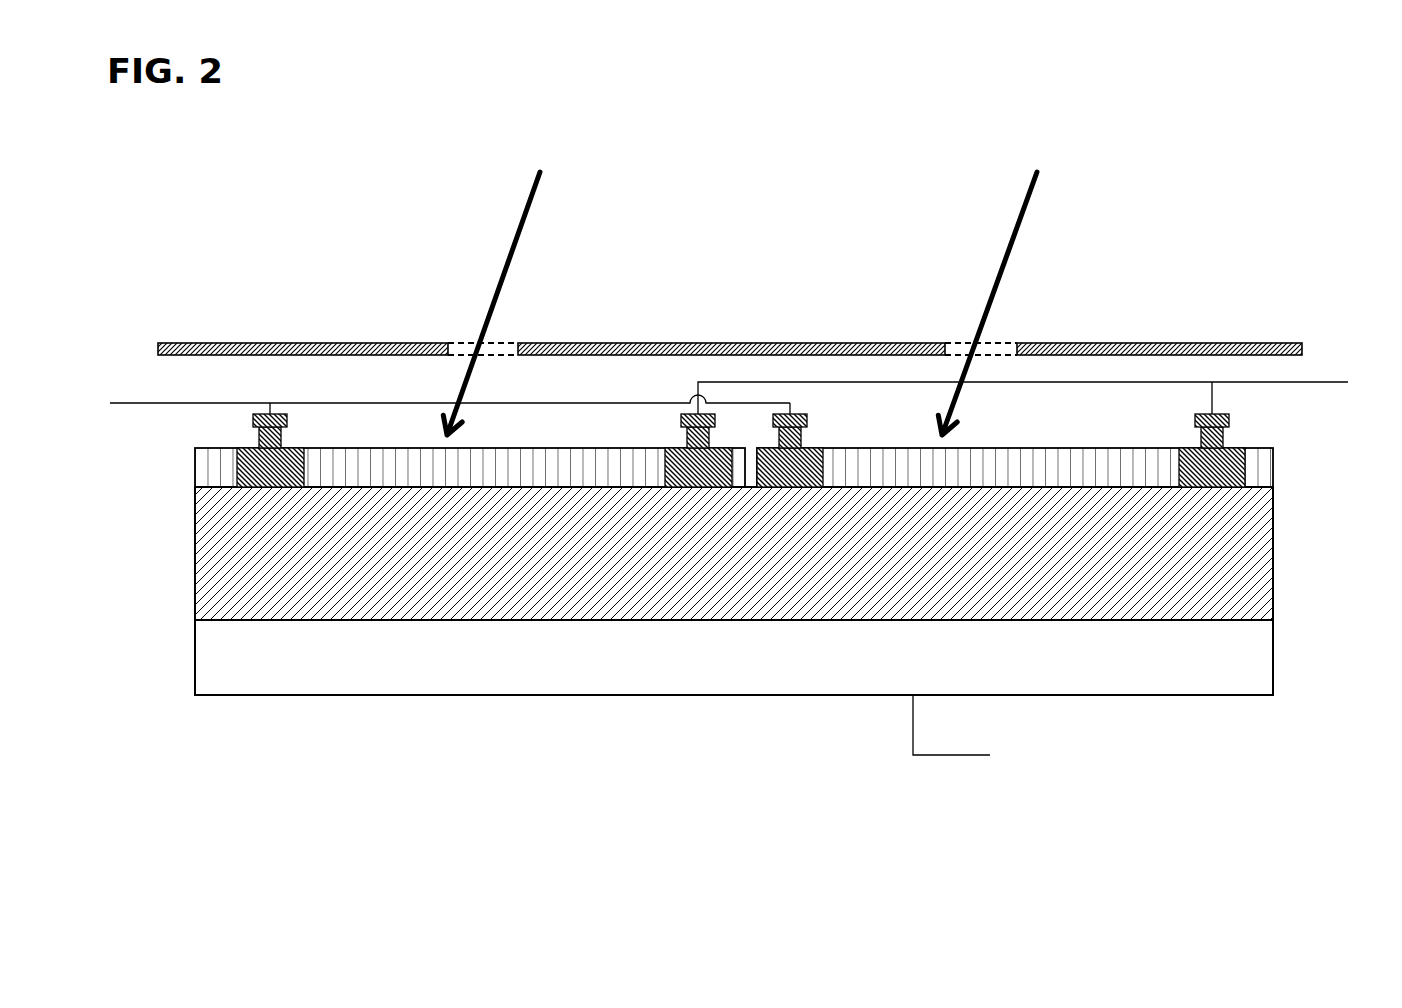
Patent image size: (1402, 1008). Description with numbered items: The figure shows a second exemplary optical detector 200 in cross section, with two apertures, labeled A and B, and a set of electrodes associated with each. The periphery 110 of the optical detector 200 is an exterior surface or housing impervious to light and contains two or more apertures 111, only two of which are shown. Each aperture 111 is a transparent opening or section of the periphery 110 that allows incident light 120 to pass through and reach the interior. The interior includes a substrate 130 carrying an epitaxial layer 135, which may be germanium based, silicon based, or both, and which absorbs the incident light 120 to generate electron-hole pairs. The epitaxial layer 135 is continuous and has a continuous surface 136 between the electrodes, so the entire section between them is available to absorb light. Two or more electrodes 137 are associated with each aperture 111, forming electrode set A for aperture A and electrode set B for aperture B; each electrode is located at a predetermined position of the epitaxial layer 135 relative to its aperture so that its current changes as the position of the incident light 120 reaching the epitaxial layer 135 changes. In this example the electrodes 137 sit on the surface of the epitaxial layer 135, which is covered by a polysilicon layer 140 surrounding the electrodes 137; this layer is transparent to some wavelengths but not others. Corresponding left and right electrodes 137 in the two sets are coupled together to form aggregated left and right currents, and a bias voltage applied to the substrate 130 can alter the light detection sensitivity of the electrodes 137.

The optical detector 200 is at (177, 129).
The periphery 110 is at (207, 343).
The aperture 111 is at (492, 350).
The incident light 120 is at (795, 271).
The substrate 130 is at (575, 673).
The epitaxial layer 135 is at (577, 593).
The continuous surface 136 is at (385, 487).
The electrodes 137 is at (262, 480).
The polysilicon layer 140 is at (565, 470).